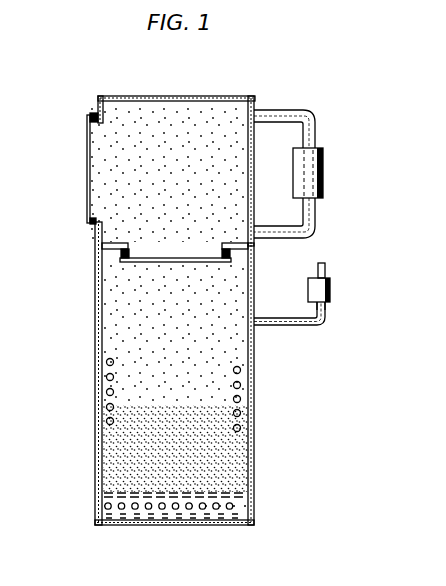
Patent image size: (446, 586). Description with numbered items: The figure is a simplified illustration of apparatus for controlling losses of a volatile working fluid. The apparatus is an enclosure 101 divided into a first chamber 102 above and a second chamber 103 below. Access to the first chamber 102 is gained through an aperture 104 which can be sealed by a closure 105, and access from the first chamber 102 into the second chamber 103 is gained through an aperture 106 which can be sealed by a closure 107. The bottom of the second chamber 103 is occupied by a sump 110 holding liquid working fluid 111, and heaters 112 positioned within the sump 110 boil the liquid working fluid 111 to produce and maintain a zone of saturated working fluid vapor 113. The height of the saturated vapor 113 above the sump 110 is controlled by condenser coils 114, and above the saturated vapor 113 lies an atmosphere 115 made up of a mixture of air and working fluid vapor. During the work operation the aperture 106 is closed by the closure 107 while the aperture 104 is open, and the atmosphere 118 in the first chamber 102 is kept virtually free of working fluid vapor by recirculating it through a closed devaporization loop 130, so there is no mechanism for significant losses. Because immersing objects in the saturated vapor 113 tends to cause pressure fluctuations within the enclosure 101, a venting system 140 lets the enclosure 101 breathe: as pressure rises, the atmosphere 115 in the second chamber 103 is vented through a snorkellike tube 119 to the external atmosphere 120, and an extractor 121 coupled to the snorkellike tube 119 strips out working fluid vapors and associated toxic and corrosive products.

The enclosure 101 is at (254, 290).
The first chamber 102 is at (128, 97).
The second chamber 103 is at (97, 478).
The aperture 104 is at (94, 155).
The closure 105 is at (88, 200).
The aperture 106 is at (173, 256).
The closure 107 is at (135, 263).
The sump 110 is at (253, 510).
The liquid working fluid 111 is at (210, 515).
The heaters 112 is at (147, 510).
The saturated working fluid vapor 113 is at (233, 462).
The condenser coils 114 is at (238, 397).
The atmosphere 115 is at (125, 328).
The atmosphere 118 is at (216, 120).
The snorkellike tube 119 is at (293, 326).
The external atmosphere 120 is at (321, 265).
The extractor 121 is at (308, 290).
The closed devaporization loop 130 is at (323, 162).
The venting system 140 is at (362, 301).